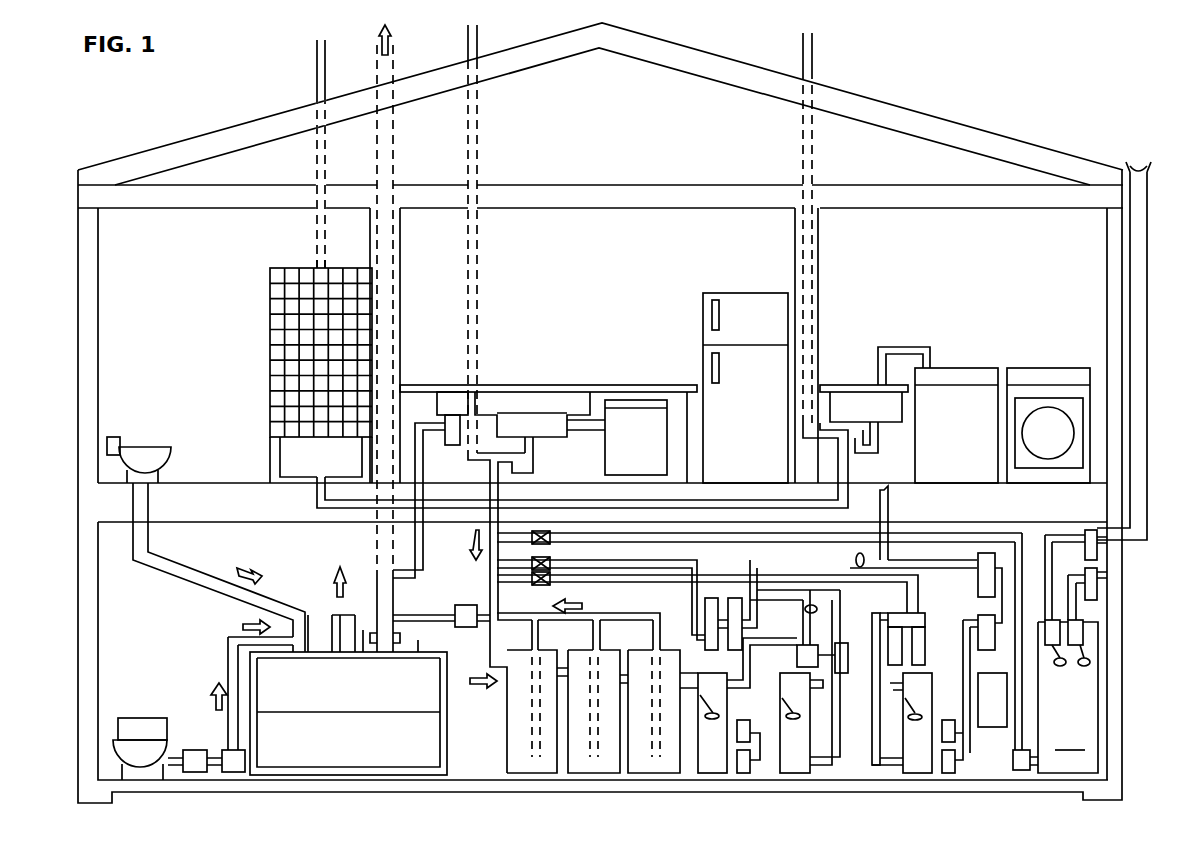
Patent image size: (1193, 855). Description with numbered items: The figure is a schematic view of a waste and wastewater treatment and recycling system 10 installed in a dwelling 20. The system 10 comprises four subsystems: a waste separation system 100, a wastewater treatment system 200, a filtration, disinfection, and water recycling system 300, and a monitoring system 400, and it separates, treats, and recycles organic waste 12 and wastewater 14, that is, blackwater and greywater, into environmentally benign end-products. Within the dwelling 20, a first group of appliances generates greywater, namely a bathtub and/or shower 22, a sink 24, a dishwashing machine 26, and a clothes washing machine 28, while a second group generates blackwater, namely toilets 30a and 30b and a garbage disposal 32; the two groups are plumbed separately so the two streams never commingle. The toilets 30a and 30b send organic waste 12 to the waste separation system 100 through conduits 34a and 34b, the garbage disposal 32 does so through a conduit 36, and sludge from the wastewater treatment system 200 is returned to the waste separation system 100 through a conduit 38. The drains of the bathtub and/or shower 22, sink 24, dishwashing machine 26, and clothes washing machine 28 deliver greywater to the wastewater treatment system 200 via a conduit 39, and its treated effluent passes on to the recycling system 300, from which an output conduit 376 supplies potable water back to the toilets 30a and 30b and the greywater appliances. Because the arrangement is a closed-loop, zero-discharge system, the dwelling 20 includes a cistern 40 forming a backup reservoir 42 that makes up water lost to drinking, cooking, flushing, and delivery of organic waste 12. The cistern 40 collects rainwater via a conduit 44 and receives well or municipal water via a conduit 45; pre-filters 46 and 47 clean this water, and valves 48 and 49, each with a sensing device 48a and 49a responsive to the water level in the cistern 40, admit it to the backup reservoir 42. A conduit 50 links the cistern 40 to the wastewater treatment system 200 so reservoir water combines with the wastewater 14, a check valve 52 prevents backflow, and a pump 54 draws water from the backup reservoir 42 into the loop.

The waste and wastewater treatment and recycling system 10 is at (1012, 91).
The dwelling 20 is at (1084, 124).
The bathtub and/or shower 22 is at (283, 345).
The sink 24 is at (553, 398).
The dishwashing machine 26 is at (636, 422).
The clothes washing machine 28 is at (947, 398).
The toilet 30a is at (145, 453).
The toilet 30b is at (143, 748).
The garbage disposal 32 is at (450, 405).
The conduit 34a is at (207, 585).
The conduit 34b is at (232, 653).
The conduit 36 is at (425, 572).
The conduit 38 is at (405, 617).
The conduit 39 is at (495, 602).
The organic waste 12 is at (368, 572).
The wastewater 14 is at (492, 628).
The cistern 40 is at (1111, 697).
The backup reservoir 42 is at (1070, 740).
The conduit 44 is at (1148, 482).
The conduit 45 is at (1138, 586).
The pre-filter 46 is at (1092, 552).
The pre-filter 47 is at (1092, 583).
The valve 48 is at (1052, 627).
The sensing device 48a is at (1066, 665).
The valve 49 is at (1078, 636).
The sensing device 49a is at (1092, 664).
The conduit 50 is at (1008, 540).
The check valve 52 is at (538, 530).
The pump 54 is at (1023, 770).
The waste separation system 100 is at (308, 795).
The wastewater treatment system 200 is at (590, 788).
The filtration, disinfection, and water recycling system 300 is at (841, 788).
The output conduit 376 is at (892, 511).
The monitoring system 400 is at (1002, 746).